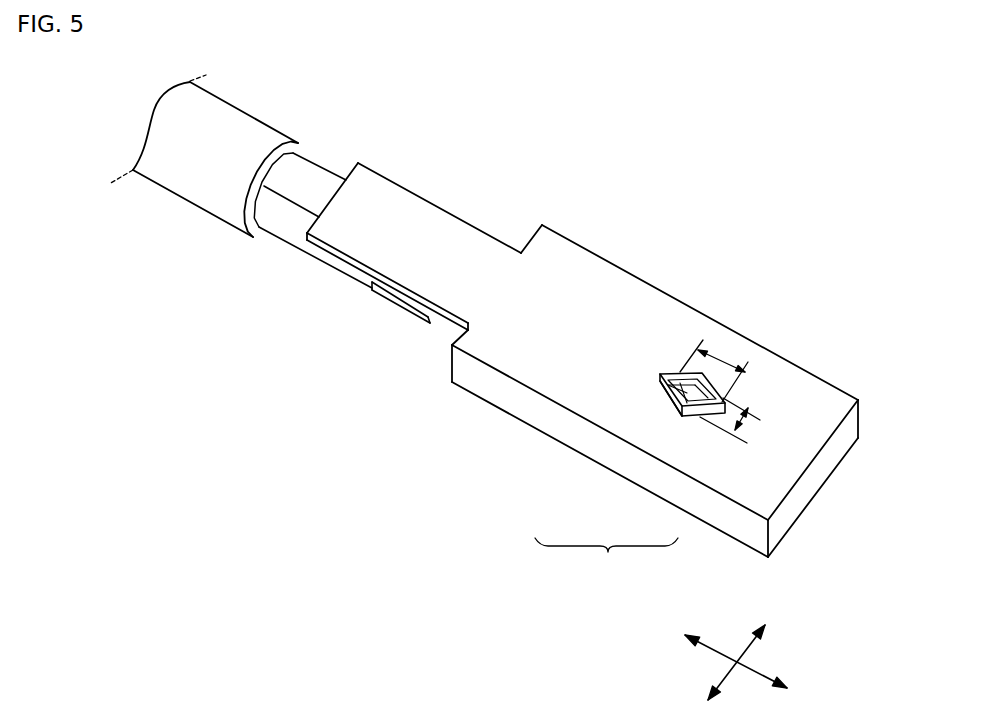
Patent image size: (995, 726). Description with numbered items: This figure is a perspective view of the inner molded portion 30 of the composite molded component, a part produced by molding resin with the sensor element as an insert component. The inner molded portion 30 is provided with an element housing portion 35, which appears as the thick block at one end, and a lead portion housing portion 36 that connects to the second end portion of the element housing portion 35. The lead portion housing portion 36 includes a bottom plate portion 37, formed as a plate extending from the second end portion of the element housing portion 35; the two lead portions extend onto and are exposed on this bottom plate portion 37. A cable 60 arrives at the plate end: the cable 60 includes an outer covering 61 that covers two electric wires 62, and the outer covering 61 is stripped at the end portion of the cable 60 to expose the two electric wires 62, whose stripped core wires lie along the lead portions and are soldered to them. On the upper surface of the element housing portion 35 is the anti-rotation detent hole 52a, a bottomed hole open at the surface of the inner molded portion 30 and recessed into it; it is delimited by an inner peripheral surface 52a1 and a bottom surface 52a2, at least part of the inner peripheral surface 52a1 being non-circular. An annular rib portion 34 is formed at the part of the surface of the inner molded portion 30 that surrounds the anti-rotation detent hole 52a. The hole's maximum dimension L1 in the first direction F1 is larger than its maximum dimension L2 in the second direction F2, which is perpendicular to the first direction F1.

The inner molded portion 30 is at (652, 283).
The annular rib portion 34 is at (660, 373).
The element housing portion 35 is at (838, 388).
The lead portion housing portion 36 is at (558, 232).
The bottom plate portion 37 is at (400, 185).
The anti-rotation detent hole 52a is at (606, 562).
The inner peripheral surface 52a1 is at (682, 406).
The bottom surface 52a2 is at (687, 393).
The cable 60 is at (215, 93).
The outer covering 61 is at (243, 125).
The electric wires 62 is at (308, 192).
The maximum dimension in the first direction L1 is at (720, 352).
The maximum dimension in the second direction L2 is at (753, 423).
The first direction F1 is at (758, 672).
The second direction F2 is at (730, 675).